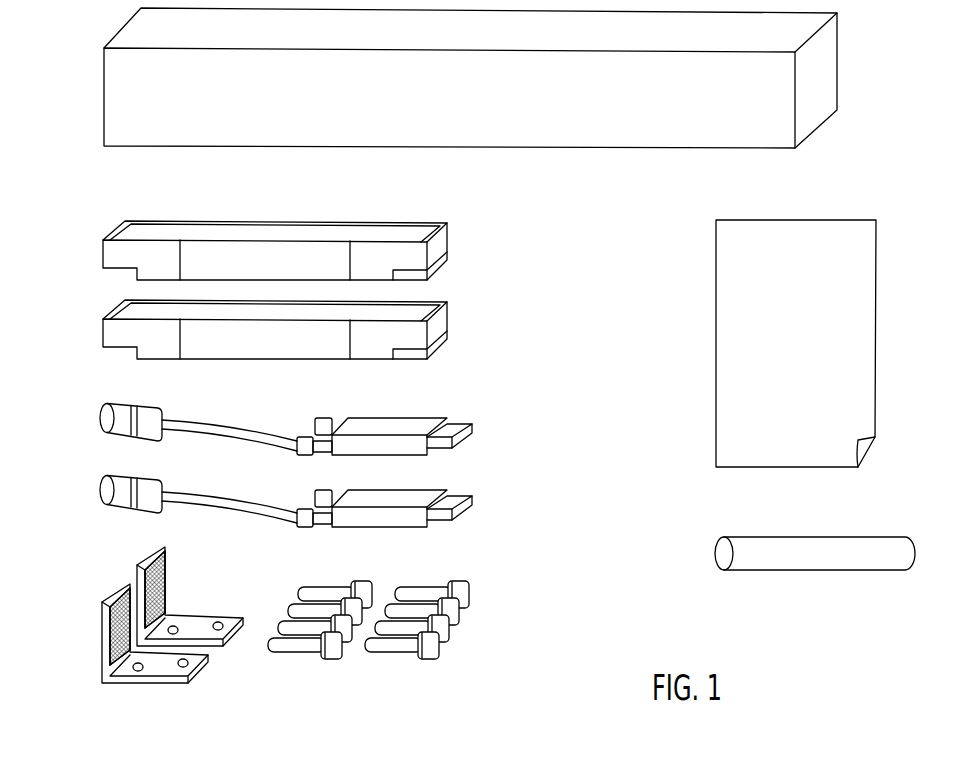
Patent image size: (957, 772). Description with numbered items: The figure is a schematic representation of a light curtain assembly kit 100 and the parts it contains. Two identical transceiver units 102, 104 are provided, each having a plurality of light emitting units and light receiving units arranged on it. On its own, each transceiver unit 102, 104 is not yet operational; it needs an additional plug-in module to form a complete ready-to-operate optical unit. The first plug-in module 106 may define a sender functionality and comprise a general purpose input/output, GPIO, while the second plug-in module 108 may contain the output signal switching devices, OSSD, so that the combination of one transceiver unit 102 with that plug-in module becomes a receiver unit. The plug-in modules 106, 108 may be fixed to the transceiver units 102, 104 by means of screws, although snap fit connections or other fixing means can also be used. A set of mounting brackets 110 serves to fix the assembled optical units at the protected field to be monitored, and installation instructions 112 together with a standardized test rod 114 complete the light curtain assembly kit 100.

The light curtain assembly kit 100 is at (468, 111).
The transceiver unit 102 is at (449, 236).
The transceiver unit 104 is at (449, 315).
The first plug-in module 106 is at (498, 407).
The second plug-in module 108 is at (498, 479).
The mounting brackets 110 is at (498, 562).
The installation instructions 112 is at (874, 381).
The test rod 114 is at (882, 561).